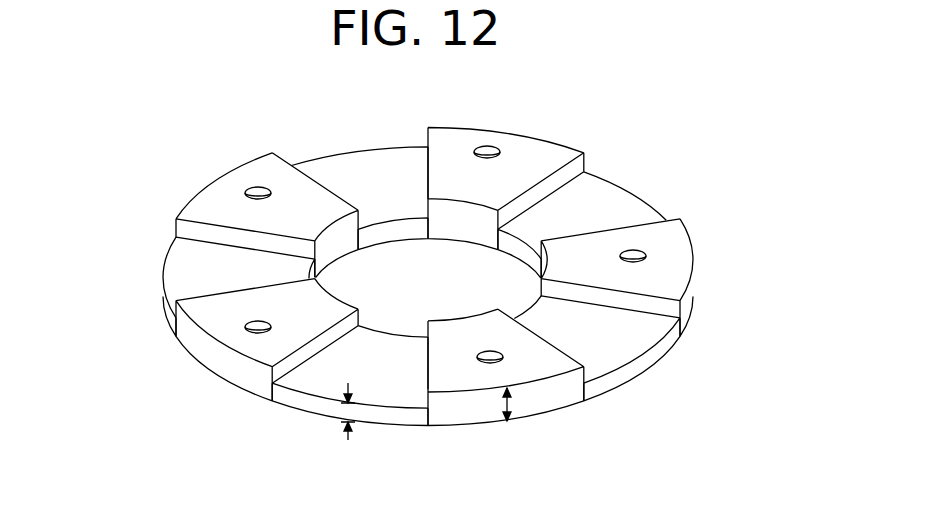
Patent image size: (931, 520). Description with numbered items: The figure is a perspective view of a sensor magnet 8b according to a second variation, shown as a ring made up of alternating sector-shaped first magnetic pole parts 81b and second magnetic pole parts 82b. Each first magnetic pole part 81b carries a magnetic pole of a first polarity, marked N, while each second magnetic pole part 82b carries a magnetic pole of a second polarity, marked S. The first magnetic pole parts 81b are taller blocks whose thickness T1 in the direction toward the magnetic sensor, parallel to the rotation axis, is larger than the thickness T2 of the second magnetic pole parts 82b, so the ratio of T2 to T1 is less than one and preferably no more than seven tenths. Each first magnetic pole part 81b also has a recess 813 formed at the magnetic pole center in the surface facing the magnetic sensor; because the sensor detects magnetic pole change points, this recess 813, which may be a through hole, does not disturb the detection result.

The sensor magnet 8b is at (162, 158).
The first magnetic pole part 81b is at (231, 188).
The second magnetic pole part 82b is at (367, 167).
The recess 813 is at (256, 196).
The thickness of first magnetic pole part T1 is at (508, 403).
The thickness of second magnetic pole part T2 is at (351, 418).